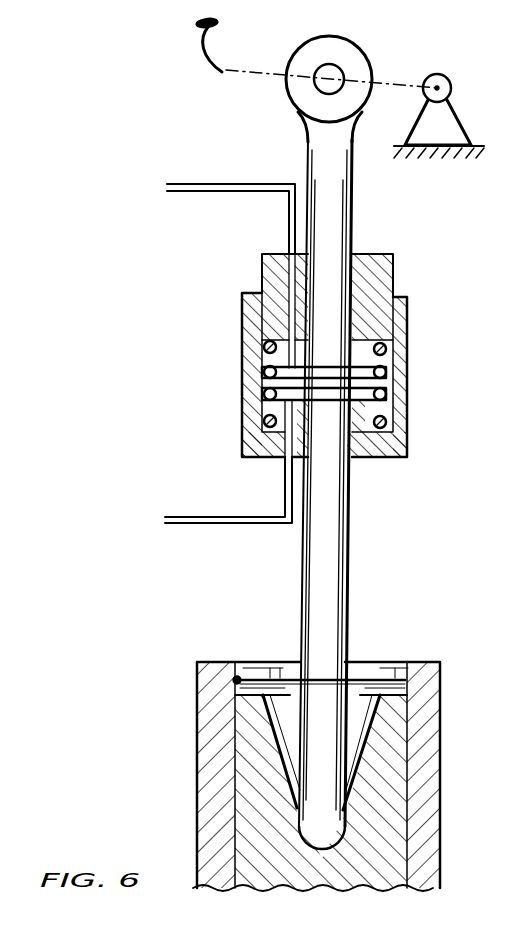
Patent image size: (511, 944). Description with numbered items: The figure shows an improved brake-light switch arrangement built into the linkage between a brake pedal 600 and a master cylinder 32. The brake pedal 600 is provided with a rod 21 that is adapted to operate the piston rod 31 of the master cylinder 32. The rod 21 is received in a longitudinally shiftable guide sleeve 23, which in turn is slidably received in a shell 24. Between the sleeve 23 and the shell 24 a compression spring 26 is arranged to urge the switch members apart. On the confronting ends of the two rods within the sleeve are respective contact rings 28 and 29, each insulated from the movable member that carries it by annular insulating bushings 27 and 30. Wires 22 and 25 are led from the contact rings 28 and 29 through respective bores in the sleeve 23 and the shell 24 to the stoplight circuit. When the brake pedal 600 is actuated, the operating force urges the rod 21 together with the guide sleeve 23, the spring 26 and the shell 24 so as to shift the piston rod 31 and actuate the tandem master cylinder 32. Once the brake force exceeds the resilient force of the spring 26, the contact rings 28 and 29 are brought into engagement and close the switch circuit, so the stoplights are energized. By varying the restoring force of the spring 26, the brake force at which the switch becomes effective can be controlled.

The brake pedal 600 is at (222, 62).
The rod 21 is at (318, 146).
The wire 22 is at (207, 181).
The sleeve 23 is at (266, 270).
The shell 24 is at (246, 402).
The wire 25 is at (232, 483).
The compression spring 26 is at (259, 346).
The annular insulating bushing 27 is at (383, 348).
The contact ring 28 is at (388, 366).
The contact ring 29 is at (382, 402).
The annular insulating bushing 30 is at (377, 430).
The piston rod 31 is at (330, 582).
The master cylinder 32 is at (408, 648).